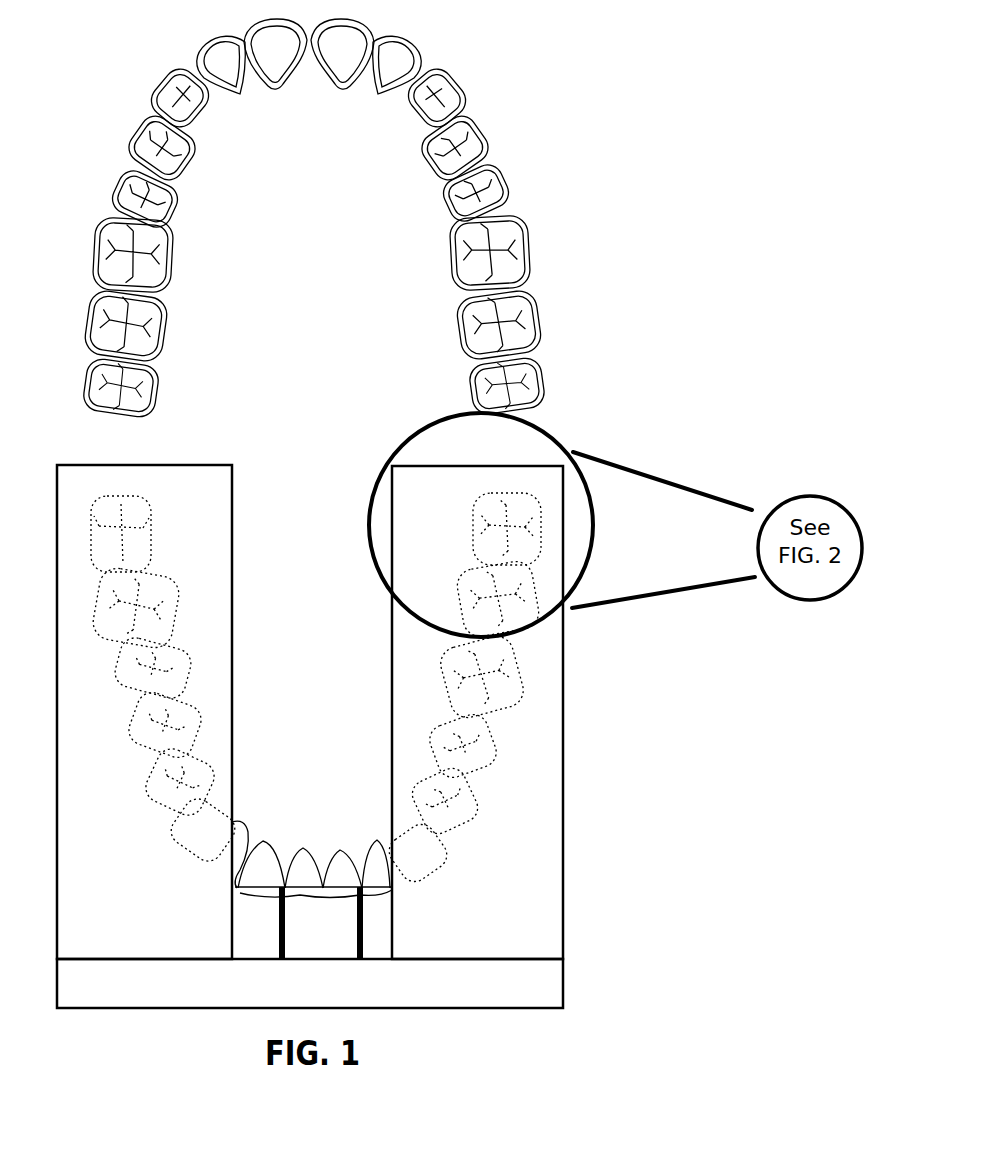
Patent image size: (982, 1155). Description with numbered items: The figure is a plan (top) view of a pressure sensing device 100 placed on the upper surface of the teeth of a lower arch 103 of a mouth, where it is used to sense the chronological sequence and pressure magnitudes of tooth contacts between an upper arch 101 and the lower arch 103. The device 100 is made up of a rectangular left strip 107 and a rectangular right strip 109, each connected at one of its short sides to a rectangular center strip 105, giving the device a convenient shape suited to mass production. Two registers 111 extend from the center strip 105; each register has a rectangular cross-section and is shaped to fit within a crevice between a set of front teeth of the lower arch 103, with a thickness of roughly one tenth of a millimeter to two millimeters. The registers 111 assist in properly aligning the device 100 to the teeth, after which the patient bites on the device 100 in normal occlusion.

The pressure sensing device 100 is at (370, 736).
The upper arch 101 is at (534, 338).
The lower arch 103 is at (525, 681).
The center strip 105 is at (328, 997).
The left strip 107 is at (135, 931).
The right strip 109 is at (513, 931).
The registers 111 is at (365, 921).